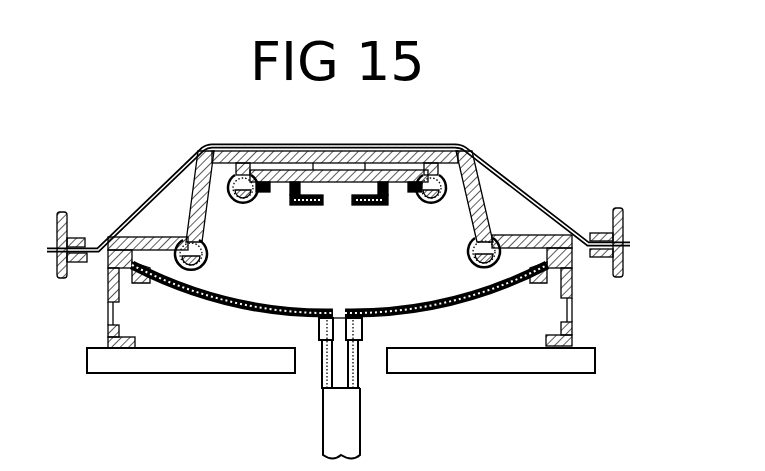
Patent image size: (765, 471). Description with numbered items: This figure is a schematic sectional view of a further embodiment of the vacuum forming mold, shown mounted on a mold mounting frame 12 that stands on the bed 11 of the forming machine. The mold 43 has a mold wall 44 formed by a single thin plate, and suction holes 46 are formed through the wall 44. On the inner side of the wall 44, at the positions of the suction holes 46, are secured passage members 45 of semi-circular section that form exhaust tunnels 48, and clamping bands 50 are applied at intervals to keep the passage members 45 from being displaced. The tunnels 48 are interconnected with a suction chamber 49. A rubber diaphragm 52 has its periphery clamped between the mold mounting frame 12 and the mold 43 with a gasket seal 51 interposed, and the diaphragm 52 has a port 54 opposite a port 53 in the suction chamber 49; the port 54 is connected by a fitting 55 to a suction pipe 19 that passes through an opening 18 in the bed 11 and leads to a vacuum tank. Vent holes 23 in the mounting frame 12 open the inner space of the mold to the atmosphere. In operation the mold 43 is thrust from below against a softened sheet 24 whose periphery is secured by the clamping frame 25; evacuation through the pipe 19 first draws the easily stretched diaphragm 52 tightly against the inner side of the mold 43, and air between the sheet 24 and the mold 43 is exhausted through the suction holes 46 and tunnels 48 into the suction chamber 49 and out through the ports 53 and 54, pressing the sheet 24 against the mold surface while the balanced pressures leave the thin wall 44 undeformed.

The bed 11 is at (190, 360).
The mold mounting frame 12 is at (572, 335).
The opening 18 is at (312, 358).
The suction pipe 19 is at (362, 427).
The vent holes 23 is at (570, 308).
The softened sheet 24 is at (387, 147).
The clamping frame 25 is at (620, 220).
The mold 43 is at (500, 190).
The mold wall 44 is at (463, 147).
The passage members 45 is at (253, 197).
The suction holes 46 is at (265, 147).
The exhaust tunnels 48 is at (213, 262).
The suction chamber 49 is at (307, 205).
The clamping bands 50 is at (240, 203).
The gasket seal 51 is at (107, 258).
The rubber diaphragm 52 is at (213, 300).
The port 53 is at (342, 203).
The port 54 is at (340, 310).
The fitting 55 is at (327, 325).